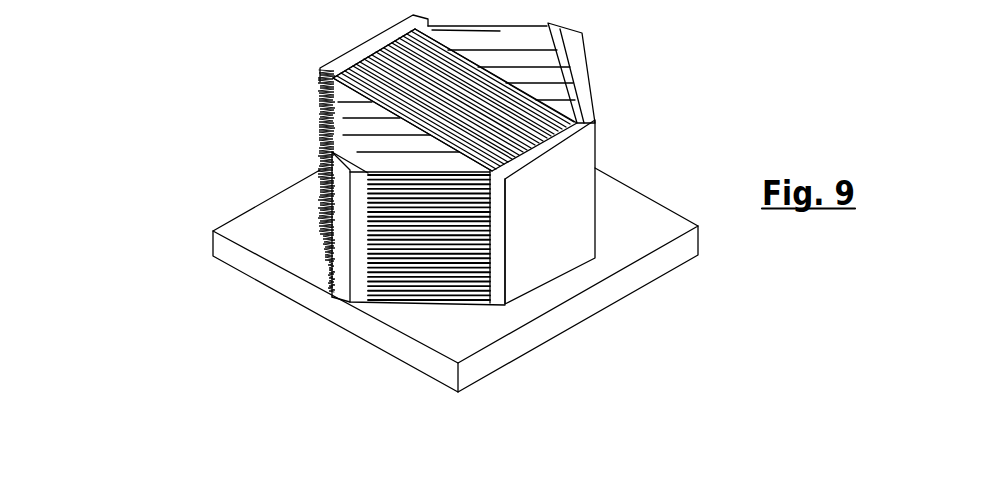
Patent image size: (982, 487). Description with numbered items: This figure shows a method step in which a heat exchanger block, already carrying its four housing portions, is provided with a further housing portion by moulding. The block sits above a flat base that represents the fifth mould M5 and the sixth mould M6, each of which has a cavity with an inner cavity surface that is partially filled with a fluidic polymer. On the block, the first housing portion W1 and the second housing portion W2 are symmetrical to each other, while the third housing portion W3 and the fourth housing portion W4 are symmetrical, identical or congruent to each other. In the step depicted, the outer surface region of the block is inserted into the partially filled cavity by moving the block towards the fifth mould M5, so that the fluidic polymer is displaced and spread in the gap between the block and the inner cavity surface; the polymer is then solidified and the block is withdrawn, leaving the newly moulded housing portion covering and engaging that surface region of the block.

The first housing portion W1 is at (540, 250).
The second housing portion W2 is at (349, 53).
The third housing portion W3 is at (583, 40).
The fourth housing portion W4 is at (338, 201).
The fifth mould M5 is at (365, 290).
The sixth mould M6 is at (273, 306).